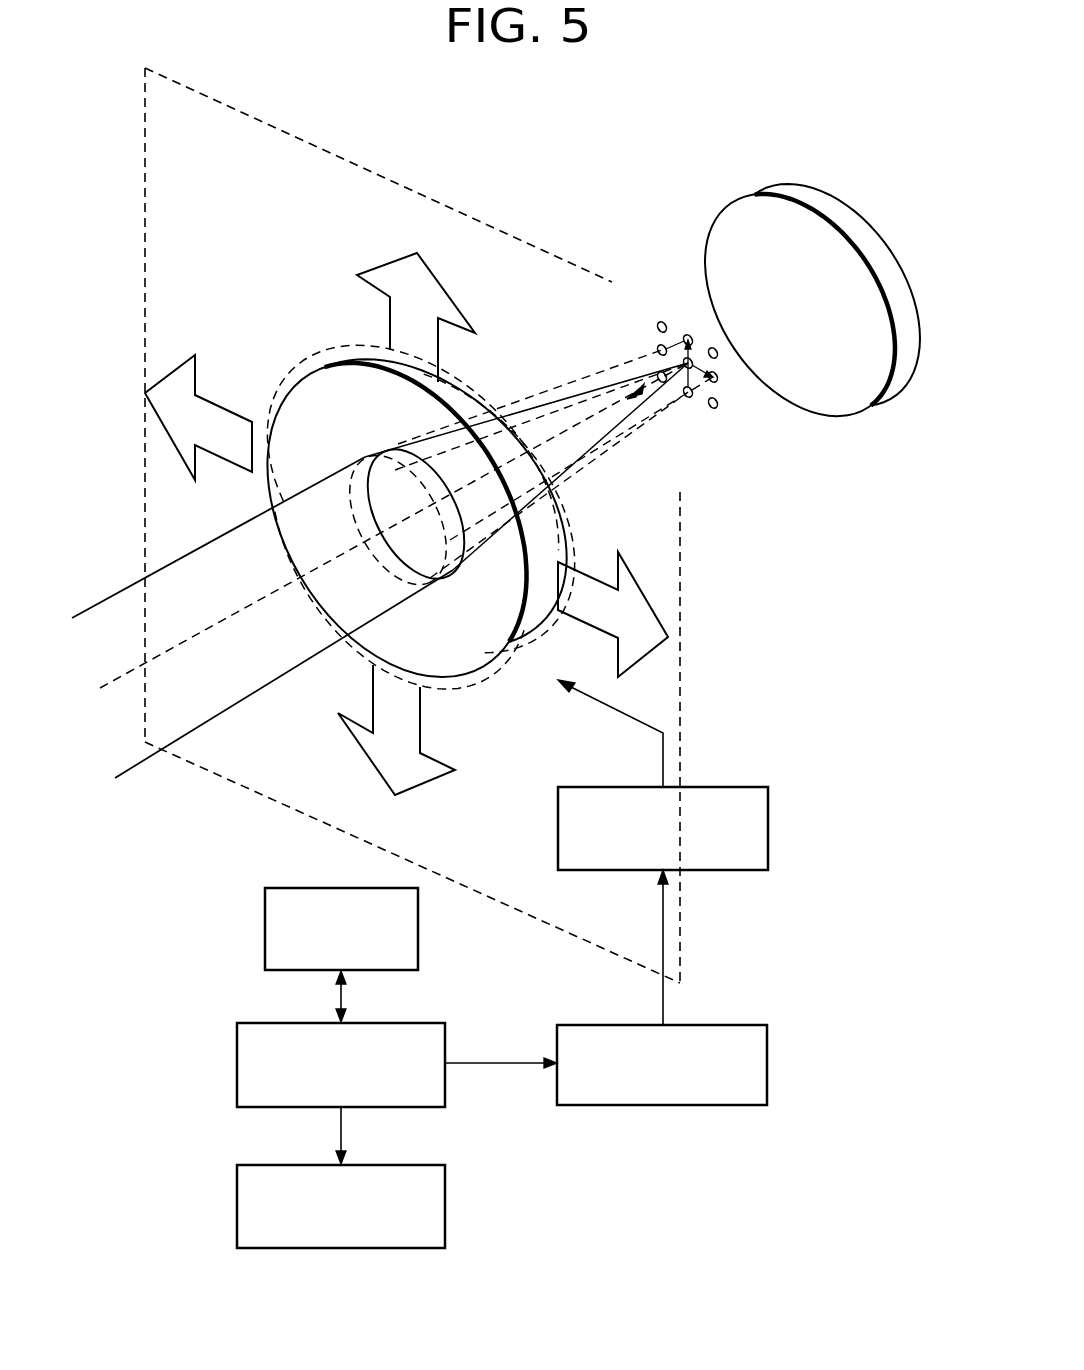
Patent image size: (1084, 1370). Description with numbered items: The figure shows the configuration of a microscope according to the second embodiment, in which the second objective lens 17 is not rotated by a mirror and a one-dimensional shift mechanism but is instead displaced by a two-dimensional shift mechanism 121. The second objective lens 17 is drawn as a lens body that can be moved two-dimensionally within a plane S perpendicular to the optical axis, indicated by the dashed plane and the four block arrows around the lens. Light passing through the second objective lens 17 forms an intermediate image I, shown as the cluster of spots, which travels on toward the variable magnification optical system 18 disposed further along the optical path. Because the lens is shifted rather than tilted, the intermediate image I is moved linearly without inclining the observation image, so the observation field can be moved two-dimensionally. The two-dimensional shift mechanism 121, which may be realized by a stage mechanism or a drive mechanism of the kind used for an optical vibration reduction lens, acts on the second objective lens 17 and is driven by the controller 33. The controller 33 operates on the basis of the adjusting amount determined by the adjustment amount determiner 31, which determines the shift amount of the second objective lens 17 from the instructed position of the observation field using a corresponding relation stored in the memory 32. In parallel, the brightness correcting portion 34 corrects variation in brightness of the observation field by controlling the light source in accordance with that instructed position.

The plane S is at (392, 181).
The second objective lens 17 is at (328, 430).
The variable magnification optical system 18 is at (820, 200).
The intermediate image I is at (724, 410).
The two-dimensional shift mechanism 121 is at (768, 797).
The controller 33 is at (712, 1107).
The memory 32 is at (265, 925).
The adjustment amount determiner 31 is at (237, 1053).
The brightness correcting portion 34 is at (237, 1200).